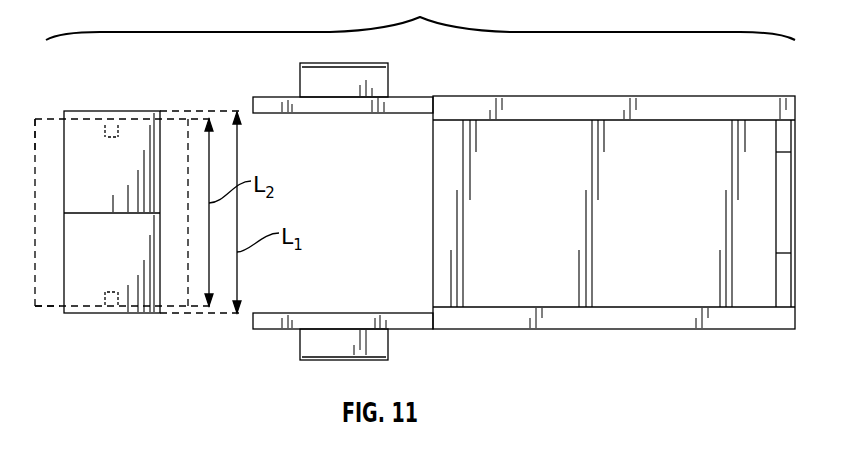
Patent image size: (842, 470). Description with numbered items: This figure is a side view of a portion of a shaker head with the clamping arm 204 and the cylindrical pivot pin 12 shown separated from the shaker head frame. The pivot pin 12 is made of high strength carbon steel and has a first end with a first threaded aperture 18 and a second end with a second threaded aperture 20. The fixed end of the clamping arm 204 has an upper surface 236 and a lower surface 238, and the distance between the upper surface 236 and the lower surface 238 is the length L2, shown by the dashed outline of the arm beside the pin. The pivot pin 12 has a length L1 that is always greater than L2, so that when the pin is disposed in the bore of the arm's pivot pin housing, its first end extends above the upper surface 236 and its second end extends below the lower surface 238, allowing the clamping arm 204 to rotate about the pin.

The cylindrical pivot pin 12 is at (101, 171).
The first threaded aperture 18 is at (113, 122).
The second threaded aperture 20 is at (113, 298).
The clamping arm 204 is at (35, 275).
The upper surface 236 is at (46, 118).
The lower surface 238 is at (47, 307).